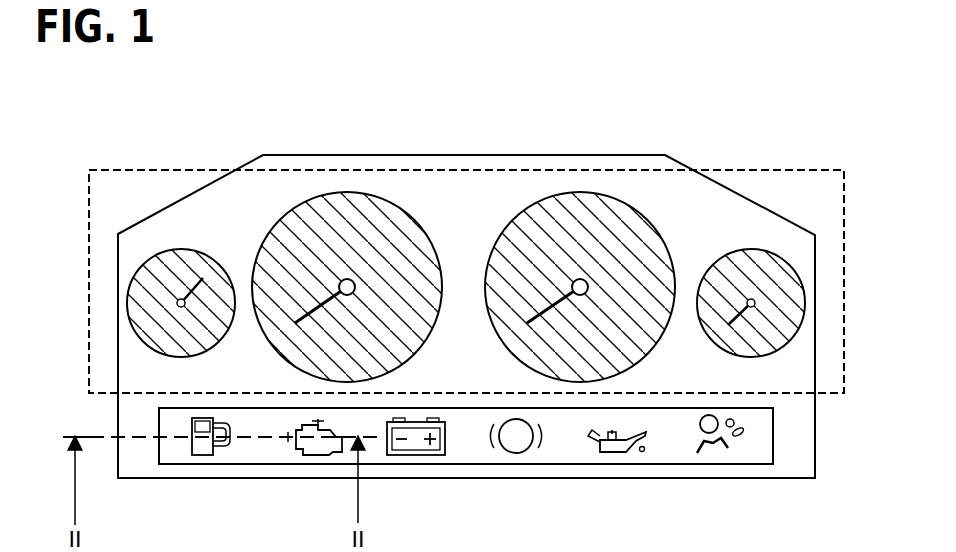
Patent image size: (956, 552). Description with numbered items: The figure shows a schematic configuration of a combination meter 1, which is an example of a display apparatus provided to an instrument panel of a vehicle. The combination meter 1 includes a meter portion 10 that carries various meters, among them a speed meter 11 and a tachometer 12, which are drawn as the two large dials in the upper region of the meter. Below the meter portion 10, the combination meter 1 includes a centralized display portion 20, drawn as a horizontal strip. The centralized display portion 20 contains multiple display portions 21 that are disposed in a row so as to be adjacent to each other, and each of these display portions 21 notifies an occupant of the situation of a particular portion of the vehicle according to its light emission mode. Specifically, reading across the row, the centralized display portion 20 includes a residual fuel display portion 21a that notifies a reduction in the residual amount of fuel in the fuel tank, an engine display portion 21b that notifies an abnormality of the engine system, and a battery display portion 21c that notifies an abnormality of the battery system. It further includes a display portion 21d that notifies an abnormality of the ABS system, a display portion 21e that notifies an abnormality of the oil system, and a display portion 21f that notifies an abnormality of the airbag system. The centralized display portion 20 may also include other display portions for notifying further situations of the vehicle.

The combination meter 1 is at (120, 158).
The meter portion 10 is at (798, 170).
The speed meter 11 is at (433, 256).
The tachometer 12 is at (668, 264).
The centralized display portion 20 is at (773, 450).
The display portions 21 is at (453, 474).
The residual fuel display portion 21a is at (206, 456).
The engine display portion 21b is at (320, 456).
The battery display portion 21c is at (433, 456).
The display portion 21d is at (512, 456).
The display portion 21e is at (612, 456).
The display portion 21f is at (725, 456).